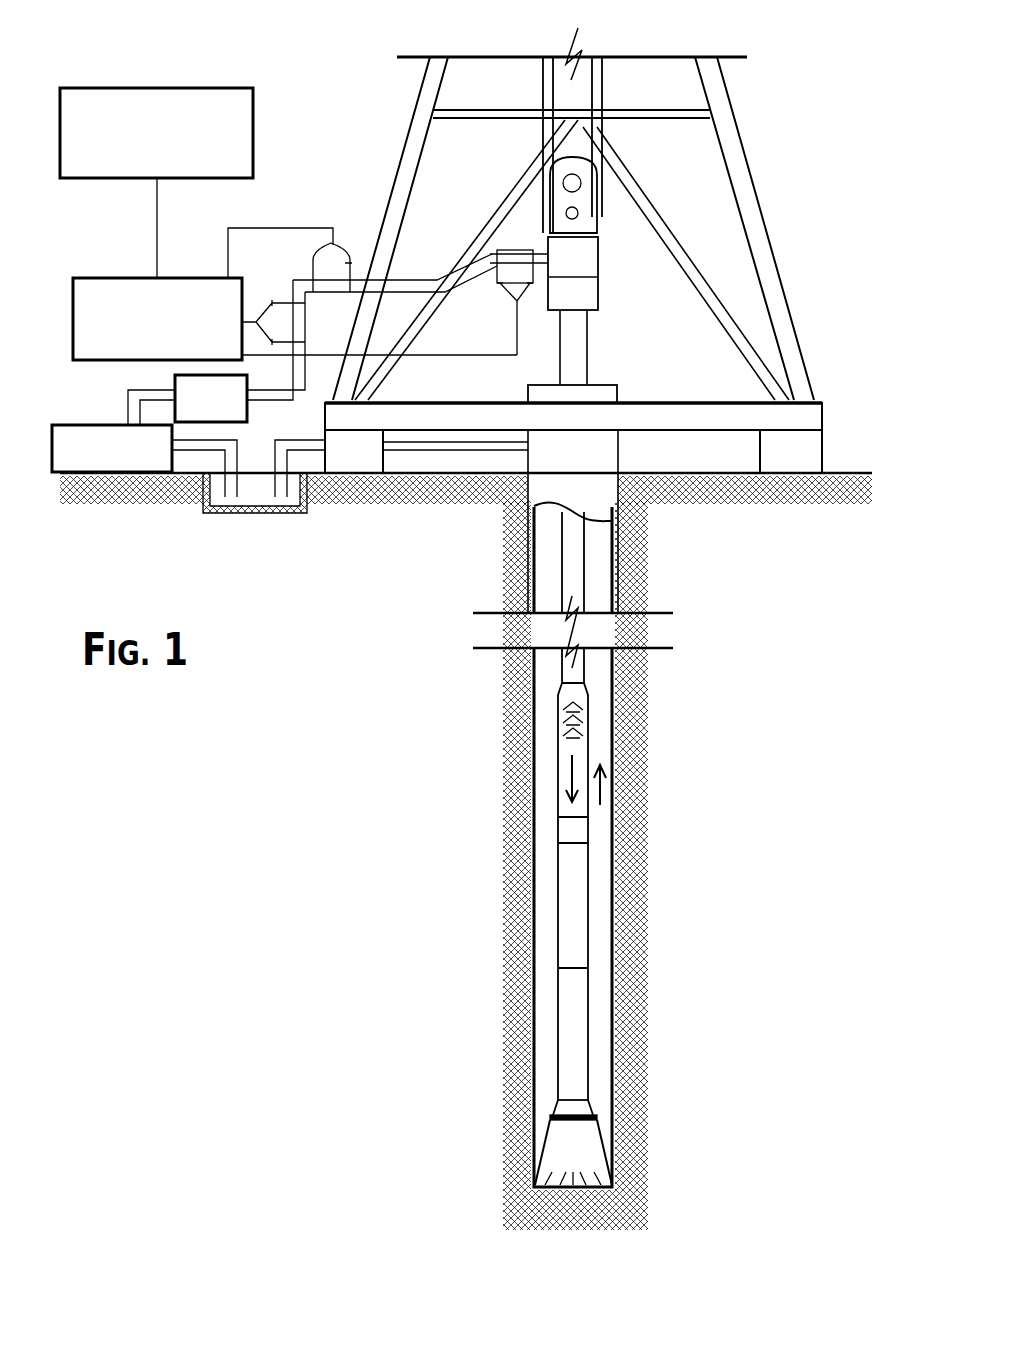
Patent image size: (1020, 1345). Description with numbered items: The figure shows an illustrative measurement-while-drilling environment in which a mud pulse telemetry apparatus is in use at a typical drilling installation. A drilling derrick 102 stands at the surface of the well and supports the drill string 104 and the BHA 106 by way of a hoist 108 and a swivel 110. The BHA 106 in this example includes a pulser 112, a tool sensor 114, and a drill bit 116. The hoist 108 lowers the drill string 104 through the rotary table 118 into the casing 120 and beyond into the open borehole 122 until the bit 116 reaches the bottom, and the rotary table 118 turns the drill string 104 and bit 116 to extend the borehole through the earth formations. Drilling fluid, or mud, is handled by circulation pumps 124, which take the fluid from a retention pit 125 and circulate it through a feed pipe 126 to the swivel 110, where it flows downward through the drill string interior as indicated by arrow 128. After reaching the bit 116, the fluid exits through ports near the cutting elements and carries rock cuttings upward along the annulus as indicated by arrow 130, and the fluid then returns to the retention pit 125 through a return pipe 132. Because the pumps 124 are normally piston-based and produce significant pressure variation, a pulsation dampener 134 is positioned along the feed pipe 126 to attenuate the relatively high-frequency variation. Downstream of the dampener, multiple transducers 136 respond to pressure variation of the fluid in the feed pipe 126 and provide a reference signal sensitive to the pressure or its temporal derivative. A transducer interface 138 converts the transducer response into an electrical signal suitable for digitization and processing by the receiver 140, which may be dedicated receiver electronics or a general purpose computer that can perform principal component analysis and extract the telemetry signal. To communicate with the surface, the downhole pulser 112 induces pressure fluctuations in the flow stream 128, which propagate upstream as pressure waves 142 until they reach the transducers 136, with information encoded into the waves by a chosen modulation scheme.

The drilling derrick 102 is at (745, 178).
The drill string 104 is at (558, 681).
The BHA 106 is at (600, 897).
The hoist 108 is at (593, 190).
The swivel 110 is at (598, 273).
The pulser 112 is at (597, 855).
The tool sensor 114 is at (596, 1072).
The drill bit 116 is at (598, 1140).
The rotary table 118 is at (605, 391).
The casing 120 is at (620, 547).
The open borehole 122 is at (603, 748).
The circulation pumps 124 is at (96, 422).
The retention pit 125 is at (257, 508).
The feed pipe 126 is at (398, 282).
The arrow indicating downward flow 128 is at (565, 770).
The arrow indicating upward annulus flow 130 is at (607, 790).
The return pipe 132 is at (417, 452).
The pulsation dampener 134 is at (247, 414).
The transducers 136 is at (313, 278).
The transducer interface 138 is at (128, 278).
The receiver 140 is at (128, 180).
The pressure waves 142 is at (562, 718).